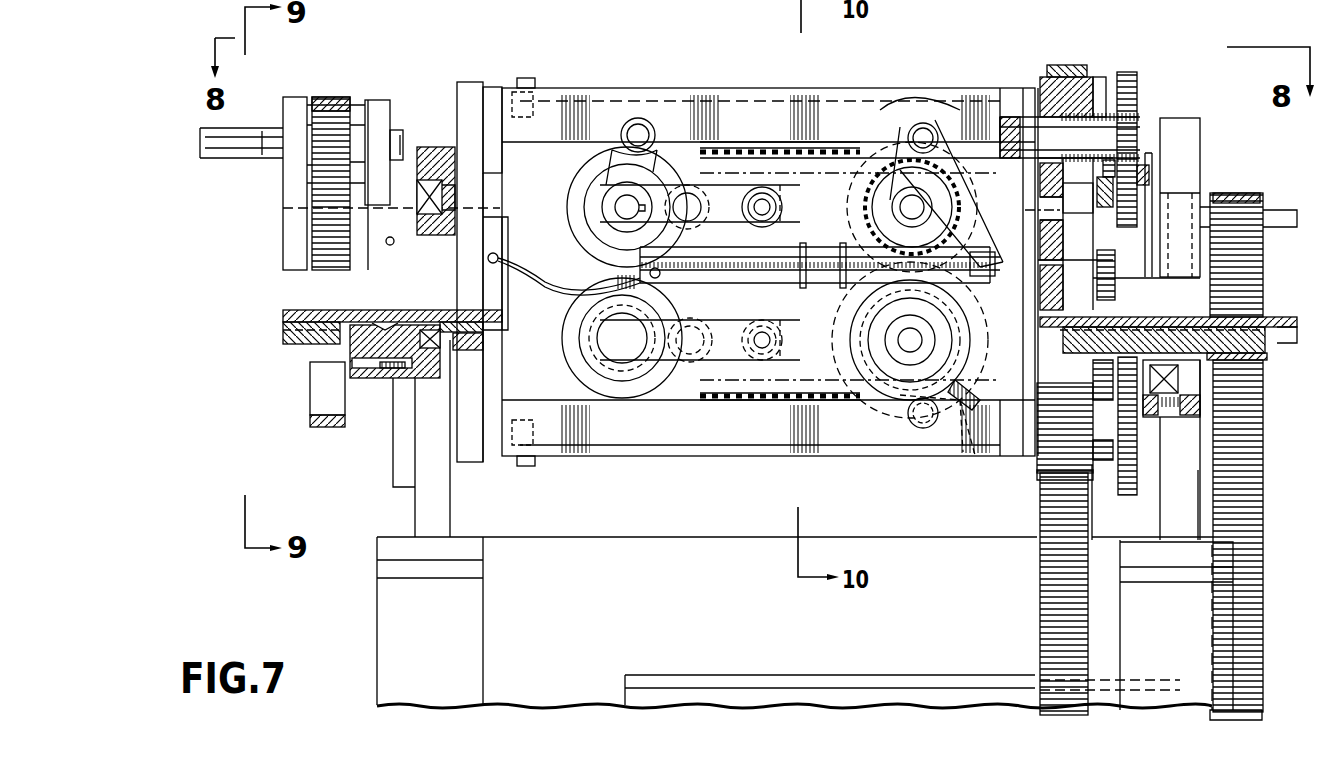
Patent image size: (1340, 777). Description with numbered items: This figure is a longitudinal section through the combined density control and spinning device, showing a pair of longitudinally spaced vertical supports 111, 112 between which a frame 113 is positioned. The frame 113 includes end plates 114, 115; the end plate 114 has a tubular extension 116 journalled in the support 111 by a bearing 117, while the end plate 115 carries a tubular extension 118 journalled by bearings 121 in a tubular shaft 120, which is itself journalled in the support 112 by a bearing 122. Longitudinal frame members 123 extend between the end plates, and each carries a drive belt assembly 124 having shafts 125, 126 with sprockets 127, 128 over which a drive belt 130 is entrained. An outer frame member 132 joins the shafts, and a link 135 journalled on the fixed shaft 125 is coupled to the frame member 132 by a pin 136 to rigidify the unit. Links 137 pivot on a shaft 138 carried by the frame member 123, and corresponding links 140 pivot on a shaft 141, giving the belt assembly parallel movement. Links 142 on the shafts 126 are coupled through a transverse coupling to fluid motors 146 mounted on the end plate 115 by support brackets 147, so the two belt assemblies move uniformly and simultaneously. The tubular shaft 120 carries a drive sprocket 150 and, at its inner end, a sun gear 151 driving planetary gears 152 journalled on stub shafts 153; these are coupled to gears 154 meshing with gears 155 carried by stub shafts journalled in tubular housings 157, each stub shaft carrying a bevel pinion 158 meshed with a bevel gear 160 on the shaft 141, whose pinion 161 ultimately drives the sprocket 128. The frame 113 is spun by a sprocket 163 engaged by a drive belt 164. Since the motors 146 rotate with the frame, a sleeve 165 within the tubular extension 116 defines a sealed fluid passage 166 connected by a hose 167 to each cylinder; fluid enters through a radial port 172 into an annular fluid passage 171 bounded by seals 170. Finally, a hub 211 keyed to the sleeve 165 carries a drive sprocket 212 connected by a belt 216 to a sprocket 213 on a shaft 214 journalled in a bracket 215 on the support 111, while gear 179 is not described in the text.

The vertical support 111 is at (412, 511).
The vertical support 112 is at (1160, 505).
The frame 113 is at (587, 78).
The end plate 114 is at (470, 92).
The end plate 115 is at (1040, 180).
The tubular extension 116 is at (485, 342).
The bearing 117 is at (377, 380).
The tubular extension 118 is at (1282, 314).
The tubular shaft 120 is at (1258, 362).
The bearing 121 is at (1103, 325).
The bearing 122 is at (1178, 412).
The longitudinal frame member 123 is at (765, 92).
The drive belt assembly 124 is at (556, 226).
The shaft 125 is at (615, 204).
The shaft 126 is at (900, 207).
The sprocket 127 is at (590, 248).
The sprocket 128 is at (750, 290).
The drive belt 130 is at (698, 145).
The outer frame member 132 is at (792, 174).
The link 135 is at (730, 174).
The pin 136 is at (762, 215).
The link 137 is at (606, 170).
The shaft 138 is at (626, 133).
The link 140 is at (958, 190).
The shaft 141 is at (908, 132).
The link 142 is at (992, 342).
The fluid motor 146 is at (758, 272).
The support bracket 147 is at (848, 312).
The drive sprocket 150 is at (1262, 192).
The sun gear 151 is at (1045, 355).
The planetary gear 152 is at (1135, 295).
The stub shaft 153 is at (1100, 214).
The gear 154 is at (1140, 198).
The gear 155 is at (1140, 92).
The tubular housing 157 is at (1098, 100).
The bevel pinion 158 is at (966, 96).
The bevel gear 160 is at (878, 105).
The pinion 161 is at (925, 92).
The sprocket 163 is at (1040, 75).
The drive belt 164 is at (1052, 622).
The sleeve 165 is at (300, 308).
The fluid passage 166 is at (440, 310).
The hose 167 is at (532, 292).
The seal 170 is at (370, 340).
The annular fluid passage 171 is at (390, 310).
The radial port 172 is at (396, 236).
The gear 179 is at (1248, 495).
The hub 211 is at (310, 390).
The drive sprocket 212 is at (308, 422).
The sprocket 213 is at (330, 98).
The shaft 214 is at (238, 158).
The bracket 215 is at (384, 110).
The belt 216 is at (333, 432).